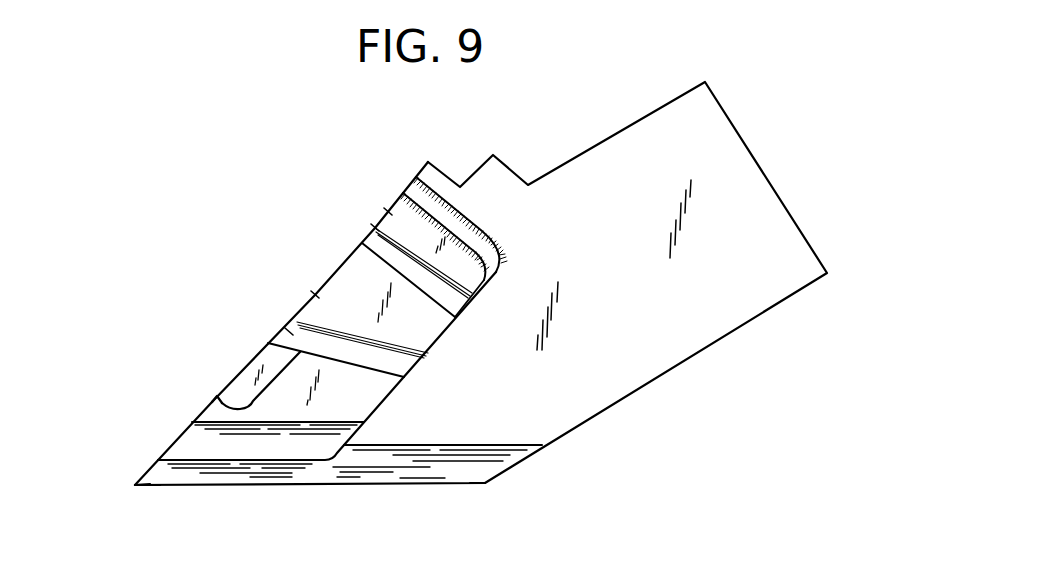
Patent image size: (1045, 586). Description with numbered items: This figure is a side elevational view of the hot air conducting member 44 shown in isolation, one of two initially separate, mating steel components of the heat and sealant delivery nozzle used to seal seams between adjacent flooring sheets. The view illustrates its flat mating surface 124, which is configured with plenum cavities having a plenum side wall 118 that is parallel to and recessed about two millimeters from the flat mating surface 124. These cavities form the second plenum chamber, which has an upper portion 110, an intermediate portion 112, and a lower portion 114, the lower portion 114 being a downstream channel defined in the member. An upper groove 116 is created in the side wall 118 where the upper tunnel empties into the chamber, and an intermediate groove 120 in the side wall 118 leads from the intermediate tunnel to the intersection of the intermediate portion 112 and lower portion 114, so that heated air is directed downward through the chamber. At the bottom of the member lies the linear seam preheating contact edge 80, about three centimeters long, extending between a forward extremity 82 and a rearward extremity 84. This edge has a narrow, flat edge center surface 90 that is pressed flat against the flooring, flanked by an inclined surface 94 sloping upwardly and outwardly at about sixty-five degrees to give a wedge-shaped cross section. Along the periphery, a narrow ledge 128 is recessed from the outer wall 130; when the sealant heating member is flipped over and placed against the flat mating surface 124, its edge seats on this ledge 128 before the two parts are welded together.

The hot air conducting member 44 is at (604, 117).
The linear seam preheating contact edge 80 is at (327, 278).
The forward extremity 82 is at (135, 485).
The rearward extremity 84 is at (485, 483).
The flat edge center surface 90 is at (222, 488).
The inclined surface 94 is at (407, 474).
The upper portion of the second plenum chamber 110 is at (388, 212).
The intermediate portion of the second plenum chamber 112 is at (315, 295).
The lower portion of the second plenum chamber 114 is at (214, 399).
The upper groove 116 is at (375, 228).
The plenum side wall 118 is at (420, 325).
The intermediate groove 120 is at (289, 332).
The flat mating surface 124 is at (277, 378).
The narrow ledge 128 is at (467, 232).
The outer wall 130 is at (678, 344).